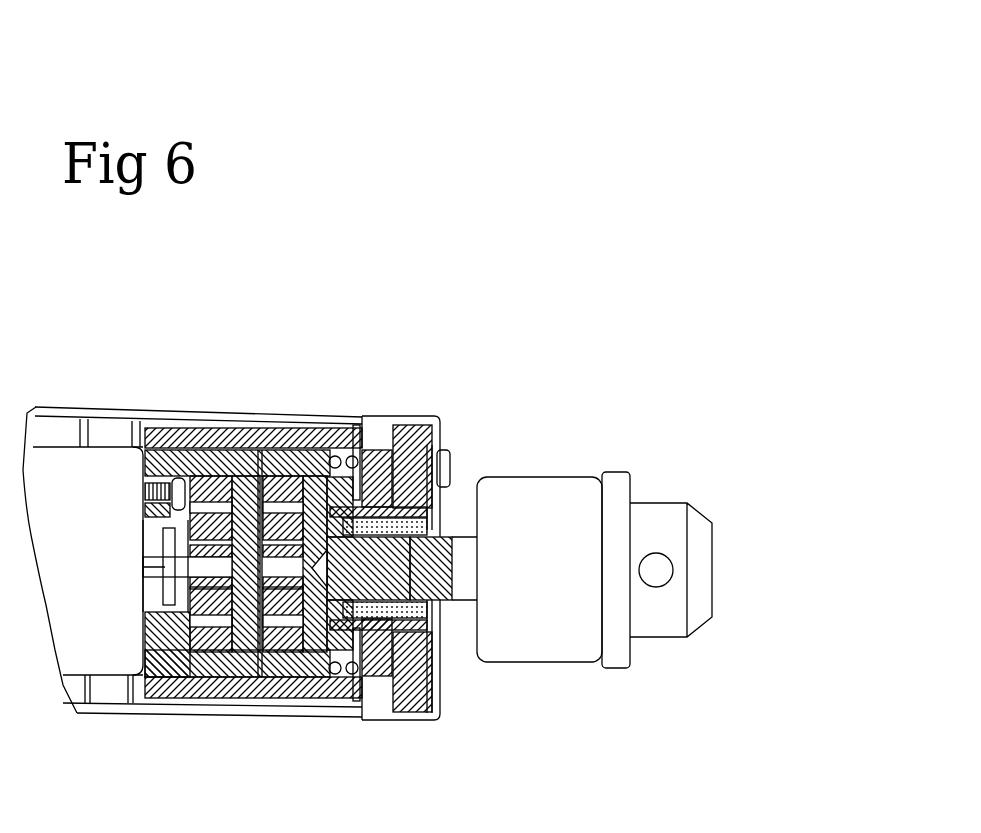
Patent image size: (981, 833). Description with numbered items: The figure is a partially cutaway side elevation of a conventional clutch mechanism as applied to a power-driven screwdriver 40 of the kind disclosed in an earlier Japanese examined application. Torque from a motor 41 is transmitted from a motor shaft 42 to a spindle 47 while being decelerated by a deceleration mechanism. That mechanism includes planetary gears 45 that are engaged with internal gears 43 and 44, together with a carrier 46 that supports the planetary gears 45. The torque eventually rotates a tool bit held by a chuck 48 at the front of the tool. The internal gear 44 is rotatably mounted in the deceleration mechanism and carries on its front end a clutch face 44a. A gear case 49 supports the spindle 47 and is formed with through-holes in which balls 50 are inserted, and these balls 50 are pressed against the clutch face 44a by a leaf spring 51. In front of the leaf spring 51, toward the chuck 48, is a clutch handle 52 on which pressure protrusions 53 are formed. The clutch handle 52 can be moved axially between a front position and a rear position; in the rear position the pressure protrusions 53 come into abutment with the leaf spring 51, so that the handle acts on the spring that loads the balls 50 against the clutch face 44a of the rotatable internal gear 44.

The power-driven screwdriver 40 is at (156, 403).
The motor 41 is at (60, 467).
The motor shaft 42 is at (197, 563).
The internal gear 43 is at (163, 690).
The internal gear 44 is at (312, 690).
The clutch face 44a is at (320, 438).
The planetary gears 45 is at (207, 475).
The carrier 46 is at (248, 437).
The spindle 47 is at (407, 563).
The chuck 48 is at (555, 495).
The gear case 49 is at (413, 627).
The balls 50 is at (350, 455).
The leaf spring 51 is at (428, 435).
The clutch handle 52 is at (437, 716).
The pressure protrusions 53 is at (375, 452).